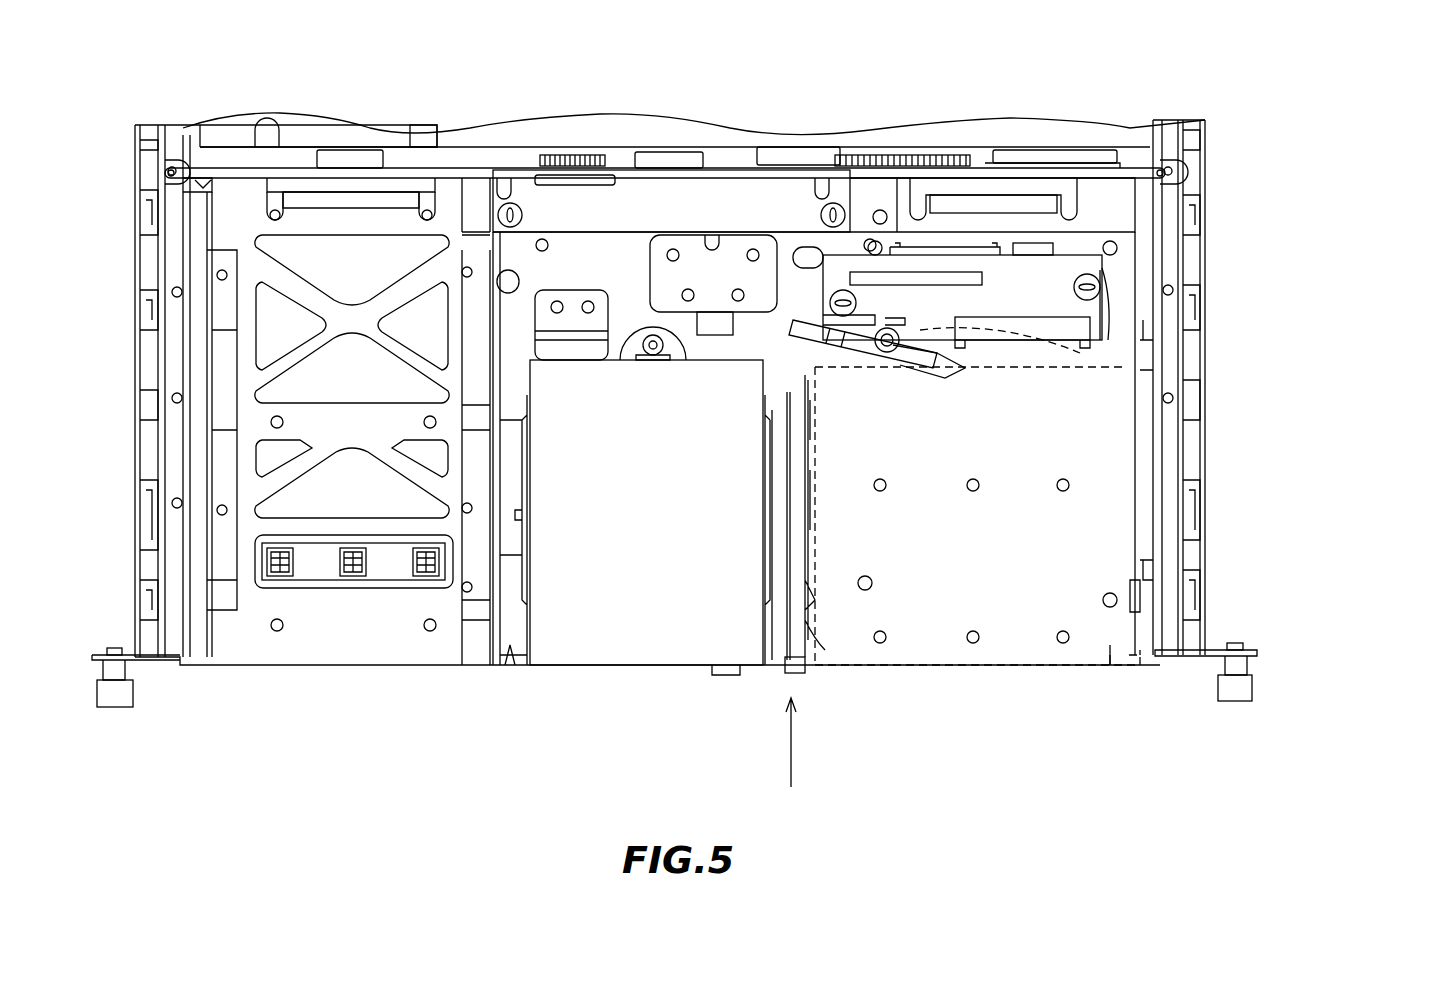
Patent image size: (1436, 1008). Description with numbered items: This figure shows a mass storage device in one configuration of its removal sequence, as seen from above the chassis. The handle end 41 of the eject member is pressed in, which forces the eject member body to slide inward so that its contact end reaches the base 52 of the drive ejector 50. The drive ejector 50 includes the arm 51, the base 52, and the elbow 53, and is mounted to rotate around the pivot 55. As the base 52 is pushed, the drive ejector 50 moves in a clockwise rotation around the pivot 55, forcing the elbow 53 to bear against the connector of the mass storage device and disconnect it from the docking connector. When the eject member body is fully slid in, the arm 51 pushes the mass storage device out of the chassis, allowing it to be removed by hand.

The drive ejector 50 is at (1105, 313).
The arm 51 is at (937, 363).
The base 52 is at (833, 327).
The elbow 53 is at (940, 378).
The pivot 55 is at (890, 352).
The handle end 41 is at (800, 675).